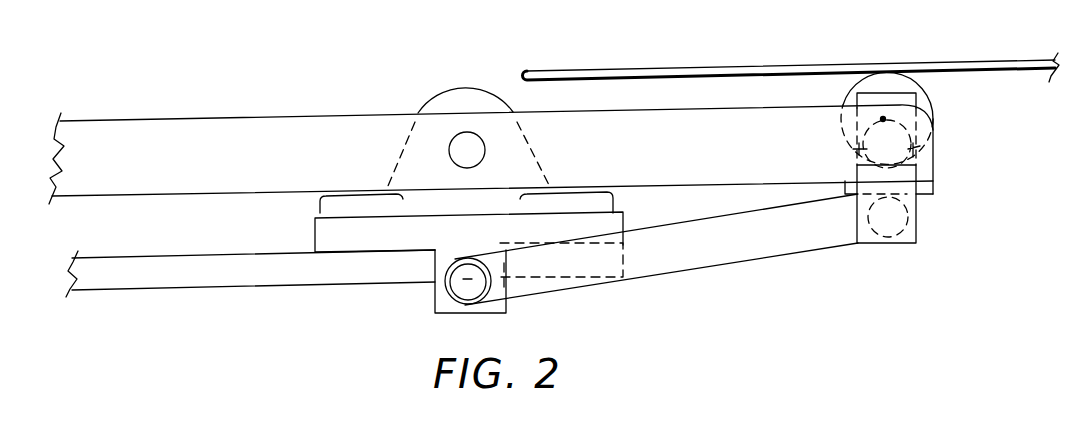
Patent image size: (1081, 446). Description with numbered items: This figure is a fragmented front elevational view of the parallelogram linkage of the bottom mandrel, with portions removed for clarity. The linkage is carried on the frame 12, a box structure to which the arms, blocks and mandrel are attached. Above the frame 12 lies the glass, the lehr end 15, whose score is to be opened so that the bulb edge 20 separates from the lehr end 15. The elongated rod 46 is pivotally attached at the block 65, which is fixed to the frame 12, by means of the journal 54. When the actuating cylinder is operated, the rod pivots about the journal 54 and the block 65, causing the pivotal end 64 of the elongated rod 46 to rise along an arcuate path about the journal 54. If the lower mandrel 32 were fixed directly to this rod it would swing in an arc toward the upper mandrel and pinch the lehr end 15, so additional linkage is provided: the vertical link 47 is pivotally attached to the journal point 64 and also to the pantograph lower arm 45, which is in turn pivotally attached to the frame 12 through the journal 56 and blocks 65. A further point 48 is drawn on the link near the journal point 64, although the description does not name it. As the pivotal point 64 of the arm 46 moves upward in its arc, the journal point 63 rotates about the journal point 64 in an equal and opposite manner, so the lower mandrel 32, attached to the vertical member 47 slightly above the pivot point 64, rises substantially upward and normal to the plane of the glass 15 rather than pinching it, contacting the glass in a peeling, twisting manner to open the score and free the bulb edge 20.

The frame 12 is at (324, 274).
The lehr end 15 is at (959, 62).
The bulb edge 20 is at (637, 71).
The lower mandrel 32 is at (927, 98).
The pantograph lower arm 45 is at (772, 250).
The elongated rod 46 is at (692, 153).
The vertical link 47 is at (918, 220).
The pivot pin 48 is at (886, 119).
The journal 54 is at (451, 143).
The journal 56 is at (467, 294).
The journal point 63 is at (891, 227).
The pivotal end 64 is at (856, 149).
The block 65 is at (482, 97).